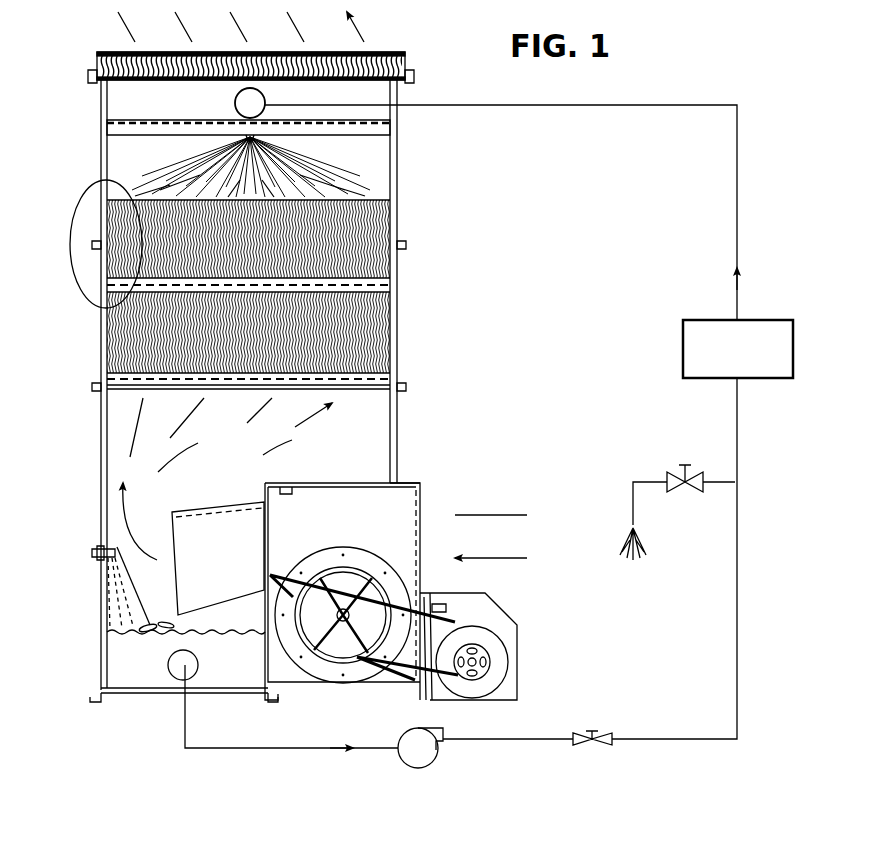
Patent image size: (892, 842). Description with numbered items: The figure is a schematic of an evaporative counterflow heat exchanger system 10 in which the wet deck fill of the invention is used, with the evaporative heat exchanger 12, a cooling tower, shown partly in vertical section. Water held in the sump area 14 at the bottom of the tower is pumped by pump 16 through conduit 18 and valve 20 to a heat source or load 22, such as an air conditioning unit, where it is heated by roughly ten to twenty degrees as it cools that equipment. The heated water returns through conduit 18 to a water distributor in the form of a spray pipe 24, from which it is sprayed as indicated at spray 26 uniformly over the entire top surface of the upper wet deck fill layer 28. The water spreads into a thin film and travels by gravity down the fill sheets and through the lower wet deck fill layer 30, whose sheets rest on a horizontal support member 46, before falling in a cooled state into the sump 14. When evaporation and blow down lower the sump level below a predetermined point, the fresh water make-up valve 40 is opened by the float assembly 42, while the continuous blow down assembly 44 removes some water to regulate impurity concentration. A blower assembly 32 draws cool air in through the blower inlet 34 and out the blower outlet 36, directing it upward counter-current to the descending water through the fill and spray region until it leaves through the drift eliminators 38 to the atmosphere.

The evaporative counterflow heat exchanger system 10 is at (650, 762).
The evaporative heat exchanger 12 is at (396, 452).
The sump area 14 is at (120, 645).
The pump 16 is at (413, 752).
The conduit 18 is at (484, 740).
The valve 20 is at (586, 745).
The heat source or load 22 is at (682, 348).
The spray pipe 24 is at (234, 104).
The spray 26 is at (317, 174).
The upper wet deck fill layer 28 is at (378, 240).
The lower wet deck fill layer 30 is at (375, 336).
The blower assembly 32 is at (517, 648).
The blower inlet 34 is at (420, 506).
The blower outlet 36 is at (178, 580).
The drift eliminators 38 is at (384, 52).
The fresh water make-up valve 40 is at (100, 557).
The float assembly 42 is at (176, 626).
The continuous blow down assembly 44 is at (678, 472).
The horizontal support member 46 is at (372, 289).